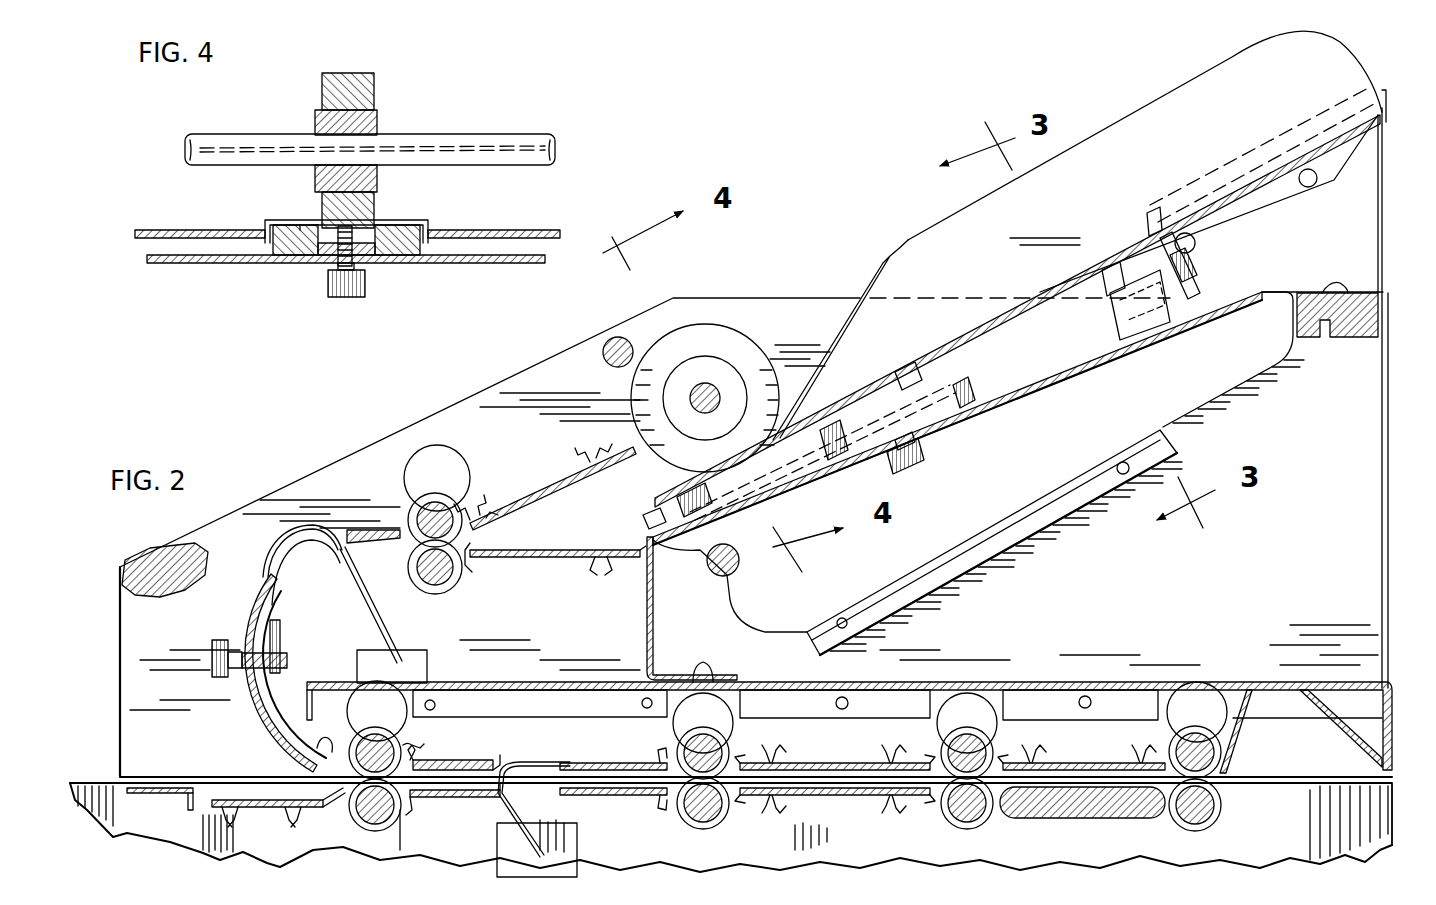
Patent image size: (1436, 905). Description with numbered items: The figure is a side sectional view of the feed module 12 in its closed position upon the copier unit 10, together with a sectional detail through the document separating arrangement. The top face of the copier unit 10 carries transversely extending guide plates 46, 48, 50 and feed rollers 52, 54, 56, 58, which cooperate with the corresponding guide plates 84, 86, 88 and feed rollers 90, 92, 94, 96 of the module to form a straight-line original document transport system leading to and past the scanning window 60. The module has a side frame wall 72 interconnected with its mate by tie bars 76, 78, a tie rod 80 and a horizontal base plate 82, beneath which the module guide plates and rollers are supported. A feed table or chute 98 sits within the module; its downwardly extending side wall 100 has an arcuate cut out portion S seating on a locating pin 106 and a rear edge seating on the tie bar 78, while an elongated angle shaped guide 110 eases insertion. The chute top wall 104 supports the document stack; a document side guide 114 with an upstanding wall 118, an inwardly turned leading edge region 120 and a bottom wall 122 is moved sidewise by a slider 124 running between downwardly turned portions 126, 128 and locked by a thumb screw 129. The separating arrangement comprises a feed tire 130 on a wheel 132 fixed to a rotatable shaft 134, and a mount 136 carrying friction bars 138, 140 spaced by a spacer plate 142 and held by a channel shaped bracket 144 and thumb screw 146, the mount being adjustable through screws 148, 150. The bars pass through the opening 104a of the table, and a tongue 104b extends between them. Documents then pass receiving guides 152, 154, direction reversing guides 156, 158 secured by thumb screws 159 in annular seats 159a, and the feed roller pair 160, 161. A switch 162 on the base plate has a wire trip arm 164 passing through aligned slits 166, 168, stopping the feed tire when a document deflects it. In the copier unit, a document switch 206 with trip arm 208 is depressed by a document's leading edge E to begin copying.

In FIG. 2, the copier unit 10 is at (1408, 784).
In FIG. 2, the feed module 12 is at (403, 418).
In FIG. 2, the guide plate 46 is at (248, 820).
In FIG. 2, the guide plate 48 is at (445, 800).
In FIG. 2, the guide plate 50 is at (835, 820).
In FIG. 2, the feed roller 52 is at (390, 822).
In FIG. 2, the feed roller 54 is at (715, 825).
In FIG. 2, the feed roller 56 is at (990, 818).
In FIG. 2, the feed roller 58 is at (1215, 824).
In FIG. 2, the scanning window 60 is at (1090, 808).
In FIG. 2, the side frame wall 72 is at (1270, 629).
In FIG. 2, the tie bar 76 is at (195, 592).
In FIG. 2, the tie bar 78 is at (1312, 340).
In FIG. 2, the tie rod 80 is at (603, 360).
In FIG. 2, the base plate 82 is at (1010, 682).
In FIG. 2, the guide plate 84 is at (428, 748).
In FIG. 2, the guide plate 86 is at (830, 758).
In FIG. 2, the guide plate 88 is at (1078, 758).
In FIG. 2, the feed roller 90 is at (377, 756).
In FIG. 2, the feed roller 92 is at (678, 745).
In FIG. 2, the feed roller 94 is at (945, 748).
In FIG. 2, the feed roller 96 is at (1222, 760).
In FIG. 2, the feed table or chute 98 is at (1386, 236).
In FIG. 2, the side wall 100 is at (1209, 203).
In FIG. 4, the top wall 104 is at (540, 231).
In FIG. 2, the top wall 104 is at (992, 328).
In FIG. 4, the opening 104a is at (198, 231).
In FIG. 4, the tongue 104b is at (300, 228).
In FIG. 2, the locating pin 106 is at (705, 572).
In FIG. 2, the angle shaped guide 110 is at (962, 555).
In FIG. 2, the document side guide 114 is at (1350, 40).
In FIG. 2, the upstanding wall 118 is at (1262, 153).
In FIG. 2, the leading edge region 120 is at (896, 272).
In FIG. 2, the bottom wall 122 is at (1108, 268).
In FIG. 2, the slider 124 is at (1112, 325).
In FIG. 2, the downwardly turned portion 126 is at (1200, 293).
In FIG. 2, the downwardly turned portion 128 is at (1100, 295).
In FIG. 2, the thumb screw 129 is at (1197, 273).
In FIG. 4, the feed tire 130 is at (375, 82).
In FIG. 2, the feed tire 130 is at (745, 336).
In FIG. 4, the wheel 132 is at (378, 118).
In FIG. 2, the wheel 132 is at (740, 372).
In FIG. 4, the rotatable shaft 134 is at (505, 134).
In FIG. 2, the rotatable shaft 134 is at (705, 385).
In FIG. 4, the mount 136 is at (500, 264).
In FIG. 2, the mount 136 is at (1157, 338).
In FIG. 4, the friction bar 138 is at (265, 246).
In FIG. 2, the friction bar 138 is at (1000, 402).
In FIG. 4, the friction bar 140 is at (430, 248).
In FIG. 4, the spacer plate 142 is at (330, 250).
In FIG. 2, the spacer plate 142 is at (648, 520).
In FIG. 4, the channel shaped bracket 144 is at (408, 222).
In FIG. 2, the channel shaped bracket 144 is at (905, 390).
In FIG. 4, the thumb screw 146 is at (366, 284).
In FIG. 2, the thumb screw 146 is at (924, 458).
In FIG. 2, the screw 148 is at (712, 672).
In FIG. 2, the screw 150 is at (1335, 288).
In FIG. 2, the receiving guide 152 is at (597, 456).
In FIG. 2, the receiving guide 154 is at (528, 552).
In FIG. 2, the direction reversing guide 156 is at (250, 695).
In FIG. 2, the direction reversing guide 158 is at (283, 668).
In FIG. 2, the thumb screw 159 is at (212, 655).
In FIG. 2, the annular seat 159a is at (283, 645).
In FIG. 2, the feed roller 160 is at (452, 468).
In FIG. 2, the feed roller 161 is at (455, 582).
In FIG. 2, the switch 162 is at (427, 665).
In FIG. 2, the wire trip arm 164 is at (380, 625).
In FIG. 2, the slit 166 is at (268, 585).
In FIG. 2, the slit 168 is at (282, 622).
In FIG. 2, the document switch 206 is at (578, 840).
In FIG. 2, the trip arm 208 is at (515, 755).
In FIG. 2, the arcuate cut out portion S is at (738, 566).
In FIG. 2, the edge E is at (362, 795).